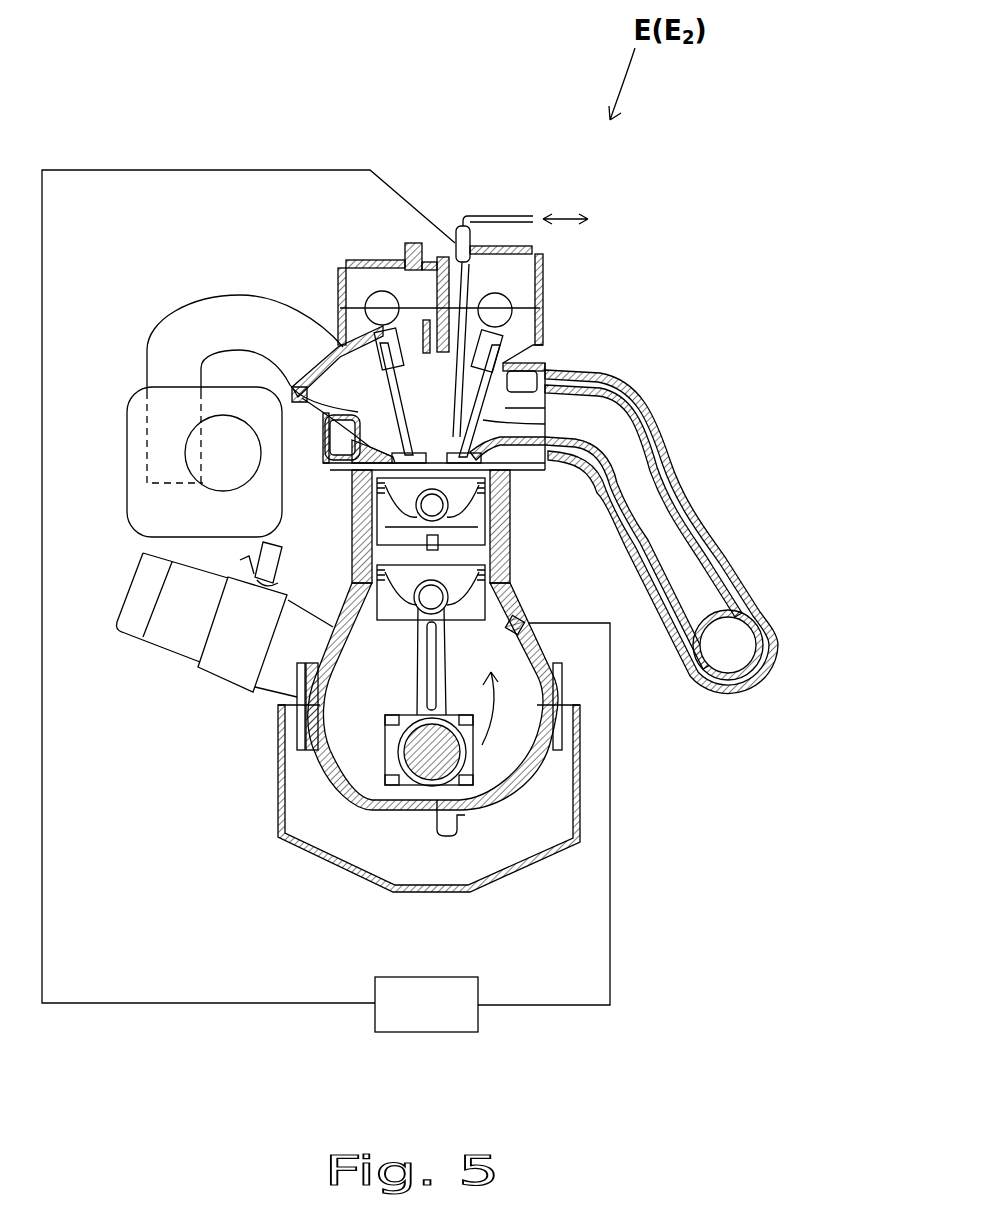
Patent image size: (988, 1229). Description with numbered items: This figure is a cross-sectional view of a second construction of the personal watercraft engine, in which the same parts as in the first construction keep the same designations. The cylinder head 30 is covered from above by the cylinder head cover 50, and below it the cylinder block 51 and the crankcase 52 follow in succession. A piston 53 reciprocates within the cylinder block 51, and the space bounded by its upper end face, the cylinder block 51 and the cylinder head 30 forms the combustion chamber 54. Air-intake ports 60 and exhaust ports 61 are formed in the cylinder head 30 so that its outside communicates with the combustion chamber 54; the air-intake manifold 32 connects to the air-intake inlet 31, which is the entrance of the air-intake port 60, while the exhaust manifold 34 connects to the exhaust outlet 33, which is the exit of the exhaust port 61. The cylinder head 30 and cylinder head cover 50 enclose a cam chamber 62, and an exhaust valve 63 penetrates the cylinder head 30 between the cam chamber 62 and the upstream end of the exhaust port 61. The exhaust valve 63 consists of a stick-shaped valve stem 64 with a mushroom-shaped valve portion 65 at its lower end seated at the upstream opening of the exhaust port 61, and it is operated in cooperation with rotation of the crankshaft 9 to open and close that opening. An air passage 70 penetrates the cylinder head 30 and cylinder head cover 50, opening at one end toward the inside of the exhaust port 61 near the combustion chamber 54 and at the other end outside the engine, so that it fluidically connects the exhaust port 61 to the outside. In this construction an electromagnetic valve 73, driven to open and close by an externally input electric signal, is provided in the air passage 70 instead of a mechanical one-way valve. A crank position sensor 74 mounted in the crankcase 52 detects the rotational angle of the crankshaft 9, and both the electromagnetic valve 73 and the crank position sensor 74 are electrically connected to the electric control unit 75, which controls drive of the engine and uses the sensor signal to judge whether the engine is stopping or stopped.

The crankshaft 9 is at (405, 755).
The cylinder head 30 is at (525, 323).
The air-intake inlet 31 is at (331, 350).
The air-intake manifold 32 is at (225, 297).
The exhaust outlet 33 is at (548, 432).
The exhaust manifold 34 is at (640, 557).
The cylinder head cover 50 is at (520, 285).
The cylinder block 51 is at (346, 506).
The crankcase 52 is at (300, 688).
The piston 53 is at (490, 568).
The combustion chamber 54 is at (487, 484).
The air-intake port 60 is at (298, 392).
The exhaust port 61 is at (647, 495).
The cam chamber 62 is at (546, 265).
The exhaust valve 63 is at (638, 520).
The valve stem 64 is at (548, 405).
The valve portion 65 is at (548, 420).
The air passage 70 is at (470, 294).
The electromagnetic valve 73 is at (457, 235).
The crank position sensor 74 is at (520, 625).
The electric control unit 75 is at (430, 1032).